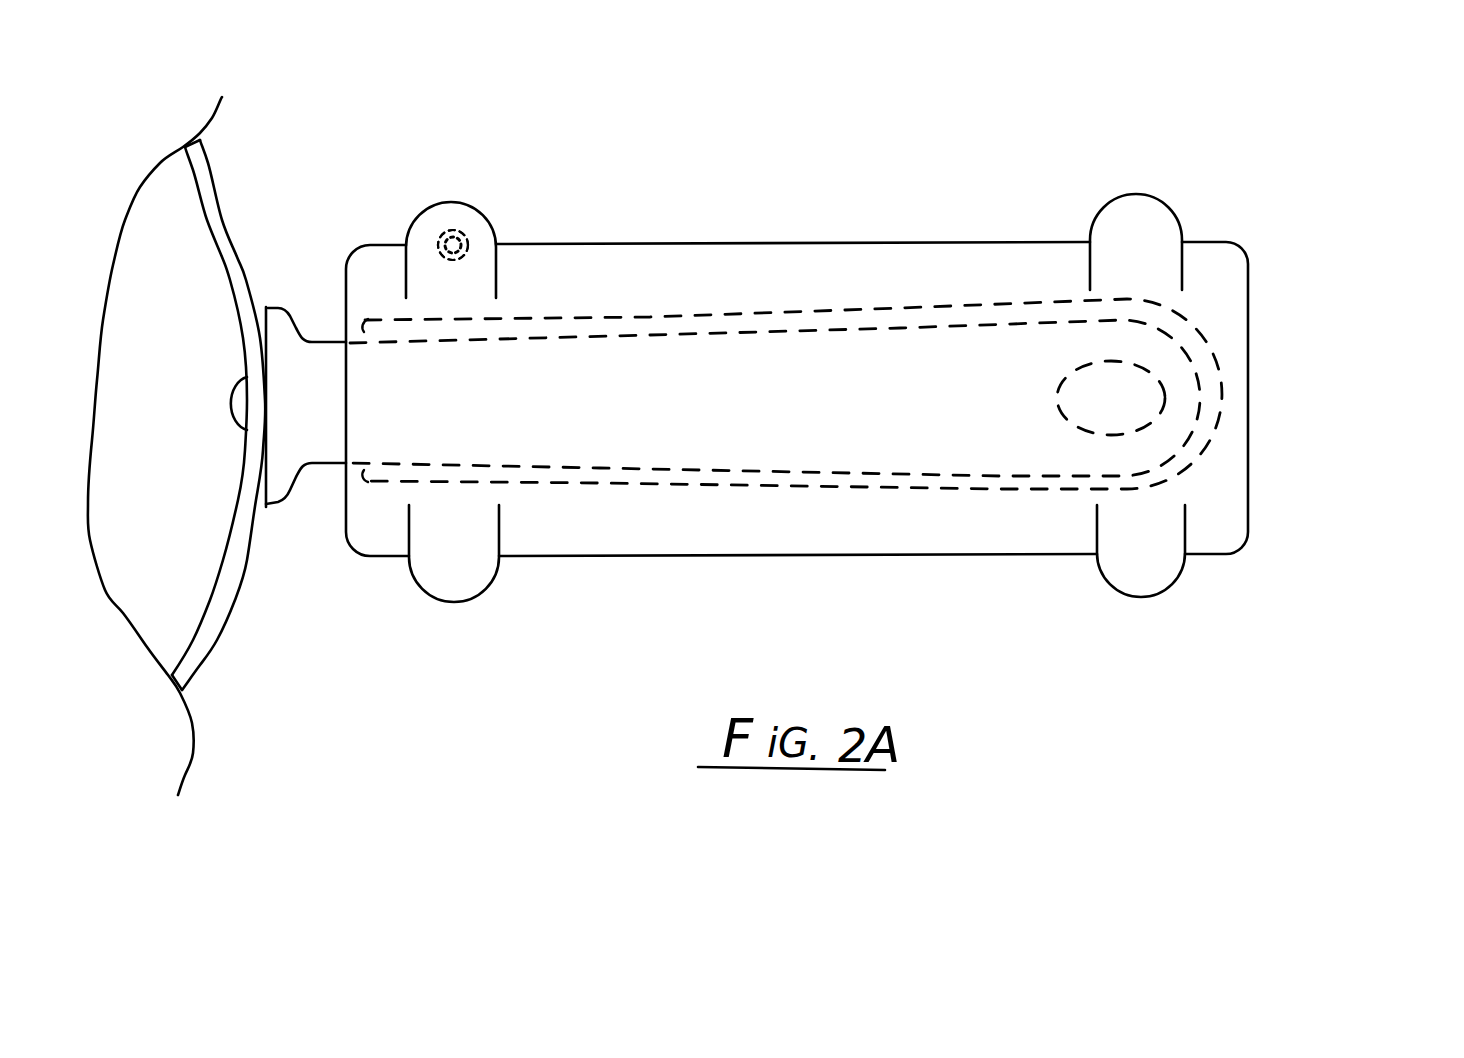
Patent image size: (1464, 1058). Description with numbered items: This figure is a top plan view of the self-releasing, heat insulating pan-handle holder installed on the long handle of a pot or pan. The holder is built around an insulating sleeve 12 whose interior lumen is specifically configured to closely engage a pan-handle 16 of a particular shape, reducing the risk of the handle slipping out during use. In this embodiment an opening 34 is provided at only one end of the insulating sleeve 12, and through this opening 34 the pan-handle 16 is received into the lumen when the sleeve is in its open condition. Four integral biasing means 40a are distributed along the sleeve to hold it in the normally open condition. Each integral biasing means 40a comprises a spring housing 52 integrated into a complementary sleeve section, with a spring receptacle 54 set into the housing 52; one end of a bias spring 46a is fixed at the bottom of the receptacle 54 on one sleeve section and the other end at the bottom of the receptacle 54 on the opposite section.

The insulating sleeve 12 is at (762, 268).
The pan-handle 16 is at (1187, 402).
The opening 34 is at (343, 315).
The integral biasing means 40a is at (430, 195).
The bias spring 46a is at (470, 236).
The spring housing 52 is at (405, 226).
The spring receptacle 54 is at (452, 220).